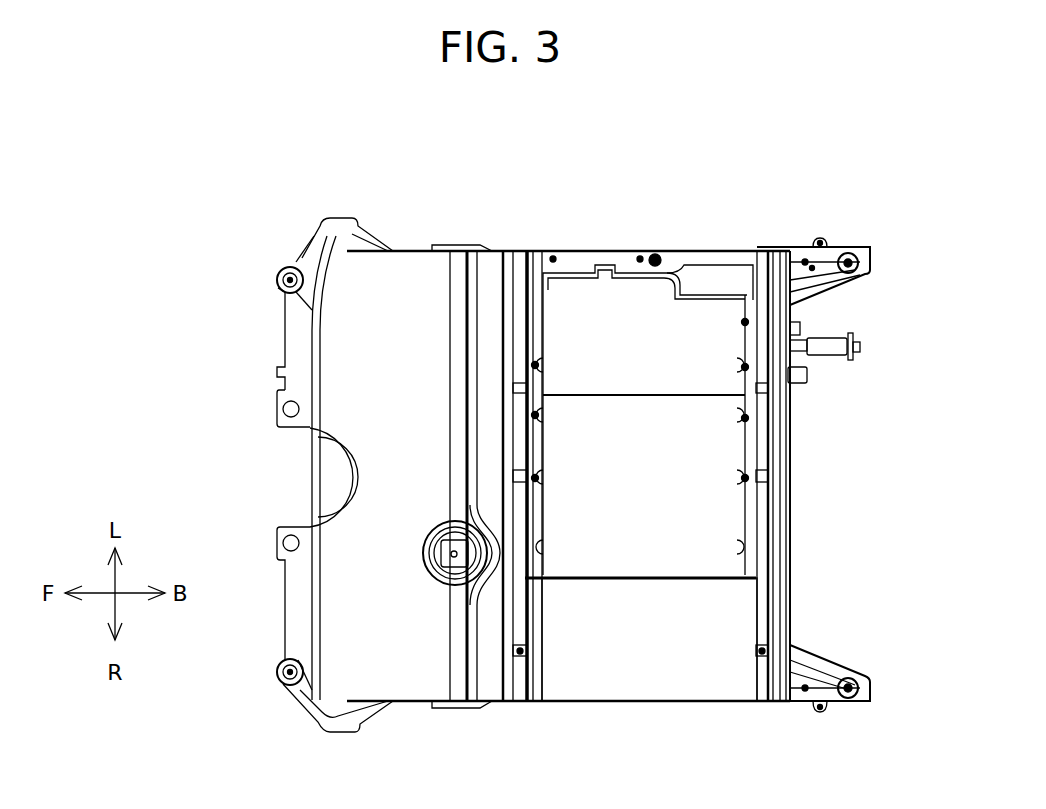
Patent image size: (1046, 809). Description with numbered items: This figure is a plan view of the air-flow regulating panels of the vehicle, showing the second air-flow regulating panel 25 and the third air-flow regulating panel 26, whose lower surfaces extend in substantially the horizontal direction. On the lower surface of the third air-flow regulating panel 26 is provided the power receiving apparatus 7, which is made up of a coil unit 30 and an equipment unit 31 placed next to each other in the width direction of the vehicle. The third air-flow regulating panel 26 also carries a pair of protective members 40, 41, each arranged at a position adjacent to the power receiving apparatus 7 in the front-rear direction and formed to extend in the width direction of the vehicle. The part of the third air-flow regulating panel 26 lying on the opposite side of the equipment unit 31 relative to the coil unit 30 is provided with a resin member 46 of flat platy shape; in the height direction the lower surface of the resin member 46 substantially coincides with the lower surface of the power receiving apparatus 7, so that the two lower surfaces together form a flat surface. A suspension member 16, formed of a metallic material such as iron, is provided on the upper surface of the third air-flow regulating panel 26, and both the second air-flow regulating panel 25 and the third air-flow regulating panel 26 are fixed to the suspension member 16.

The power receiving apparatus 7 is at (740, 421).
The suspension member 16 is at (820, 238).
The second air-flow regulating panel 25 is at (404, 251).
The third air-flow regulating panel 26 is at (551, 251).
The coil unit 30 is at (727, 445).
The equipment unit 31 is at (727, 367).
The protective member 40 is at (511, 701).
The protective member 41 is at (770, 701).
The resin member 46 is at (735, 623).